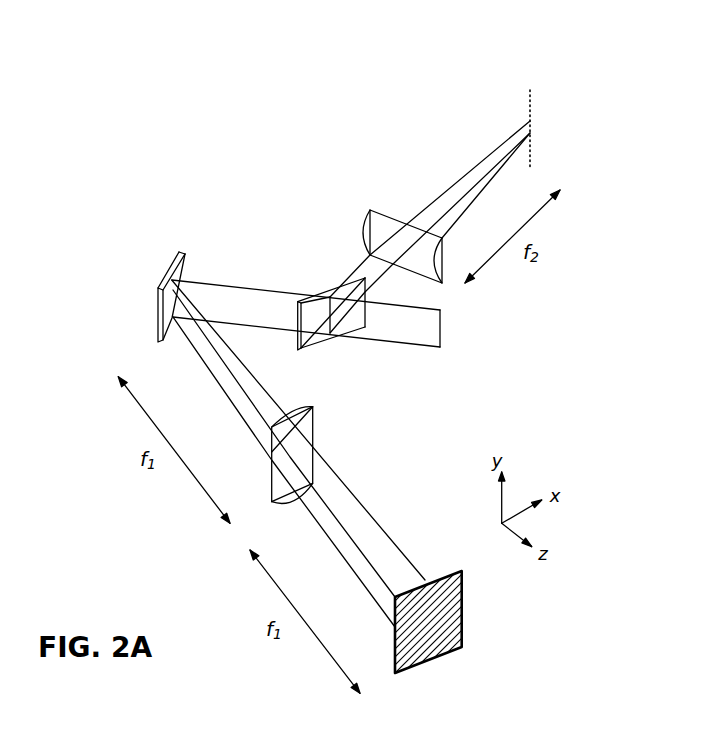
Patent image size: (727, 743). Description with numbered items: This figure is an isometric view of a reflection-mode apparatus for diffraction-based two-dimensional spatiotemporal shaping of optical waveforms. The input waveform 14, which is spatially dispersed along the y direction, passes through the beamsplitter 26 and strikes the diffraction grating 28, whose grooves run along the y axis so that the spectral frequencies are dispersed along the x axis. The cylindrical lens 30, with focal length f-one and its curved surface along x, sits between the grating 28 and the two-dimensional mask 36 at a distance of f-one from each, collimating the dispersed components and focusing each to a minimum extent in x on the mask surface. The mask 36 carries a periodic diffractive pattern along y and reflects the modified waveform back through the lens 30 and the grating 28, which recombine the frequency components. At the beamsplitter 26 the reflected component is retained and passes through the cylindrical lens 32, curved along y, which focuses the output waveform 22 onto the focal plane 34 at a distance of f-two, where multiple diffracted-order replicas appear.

The input waveform 14 is at (324, 322).
The output waveform 22 is at (430, 227).
The beamsplitter 26 is at (331, 327).
The diffraction grating 28 is at (156, 297).
The cylindrical lens 30 is at (309, 455).
The cylindrical lens 32 is at (389, 235).
The focal plane 34 is at (530, 115).
The two-dimensional mask 36 is at (425, 627).